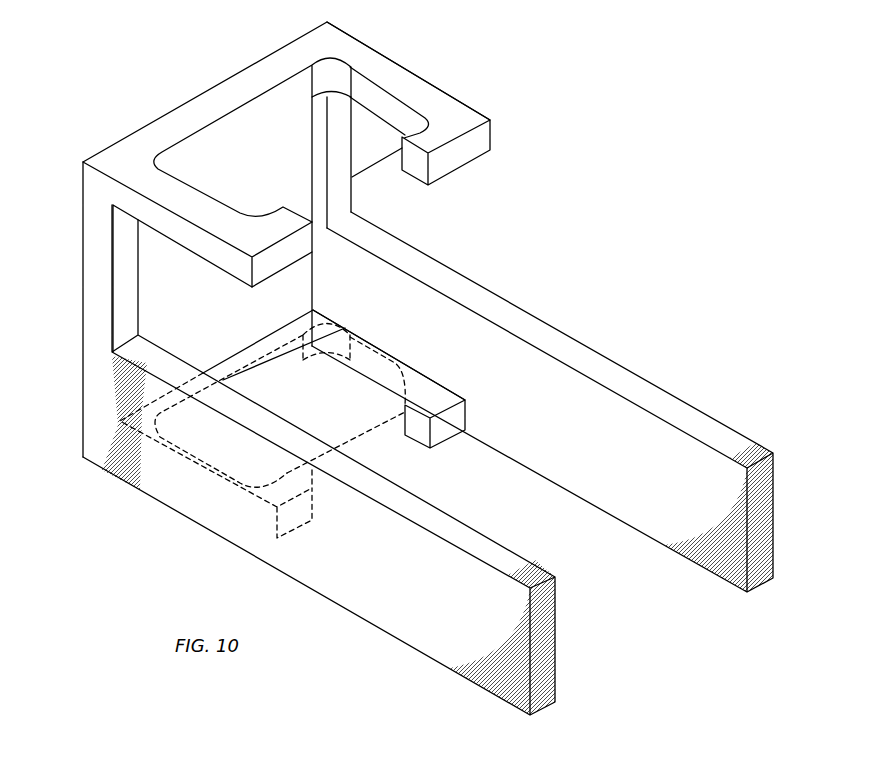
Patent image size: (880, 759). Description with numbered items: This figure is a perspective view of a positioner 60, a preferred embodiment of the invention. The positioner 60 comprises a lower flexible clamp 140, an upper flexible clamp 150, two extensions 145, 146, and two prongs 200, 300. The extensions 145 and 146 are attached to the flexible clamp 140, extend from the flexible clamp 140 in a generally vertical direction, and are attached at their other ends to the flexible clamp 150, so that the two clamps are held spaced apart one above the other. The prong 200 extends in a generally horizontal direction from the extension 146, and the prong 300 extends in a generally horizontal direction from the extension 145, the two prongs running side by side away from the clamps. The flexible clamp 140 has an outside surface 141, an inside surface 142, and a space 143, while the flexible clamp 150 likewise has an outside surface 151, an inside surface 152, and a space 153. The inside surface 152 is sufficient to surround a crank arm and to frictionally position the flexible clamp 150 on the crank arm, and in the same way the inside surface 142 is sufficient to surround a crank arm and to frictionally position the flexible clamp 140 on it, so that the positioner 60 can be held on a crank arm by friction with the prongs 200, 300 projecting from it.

The positioner 60 is at (626, 108).
The flexible clamp 140 is at (257, 350).
The outside surface 141 is at (230, 360).
The inside surface 142 is at (280, 368).
The space 143 is at (360, 447).
The extension 145 is at (93, 273).
The extension 146 is at (340, 153).
The flexible clamp 150 is at (205, 100).
The outside surface 151 is at (409, 74).
The inside surface 152 is at (193, 157).
The space 153 is at (374, 178).
The prong 200 is at (622, 380).
The prong 300 is at (468, 532).